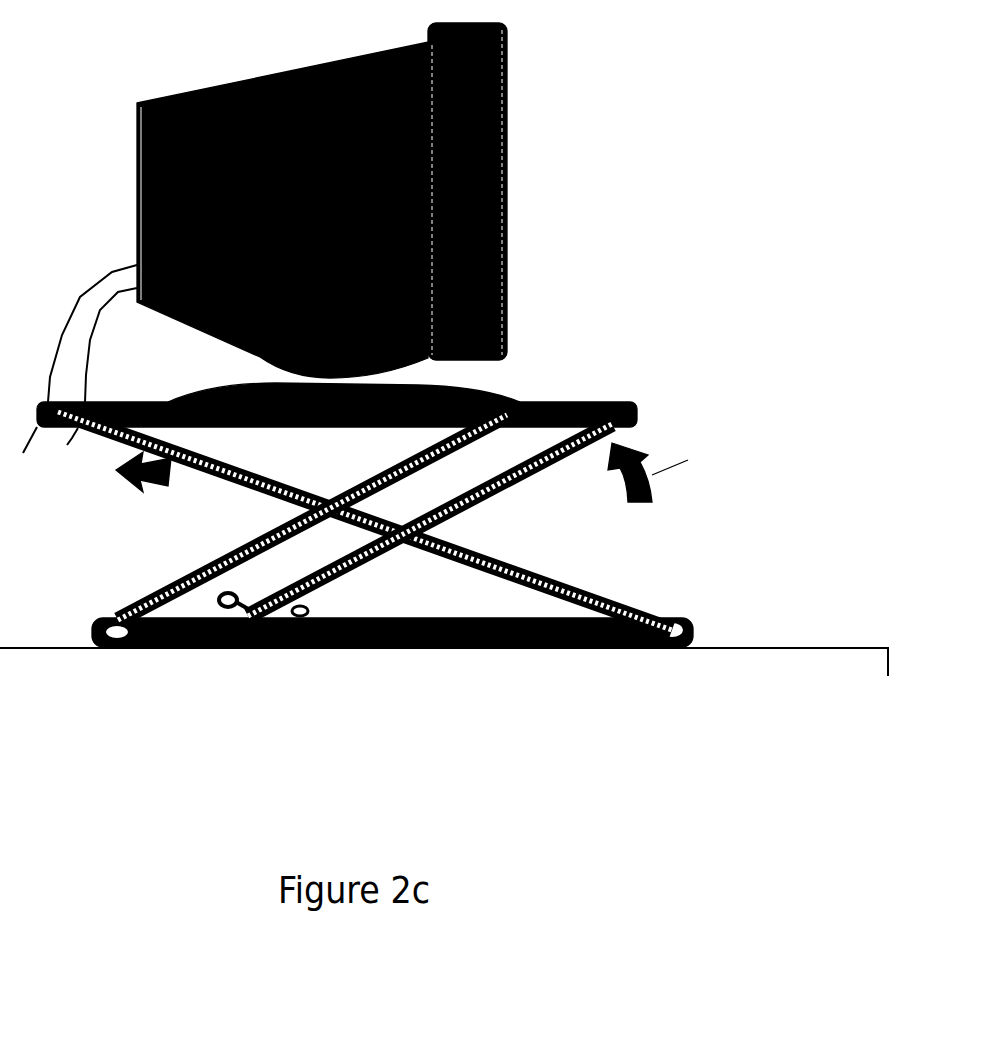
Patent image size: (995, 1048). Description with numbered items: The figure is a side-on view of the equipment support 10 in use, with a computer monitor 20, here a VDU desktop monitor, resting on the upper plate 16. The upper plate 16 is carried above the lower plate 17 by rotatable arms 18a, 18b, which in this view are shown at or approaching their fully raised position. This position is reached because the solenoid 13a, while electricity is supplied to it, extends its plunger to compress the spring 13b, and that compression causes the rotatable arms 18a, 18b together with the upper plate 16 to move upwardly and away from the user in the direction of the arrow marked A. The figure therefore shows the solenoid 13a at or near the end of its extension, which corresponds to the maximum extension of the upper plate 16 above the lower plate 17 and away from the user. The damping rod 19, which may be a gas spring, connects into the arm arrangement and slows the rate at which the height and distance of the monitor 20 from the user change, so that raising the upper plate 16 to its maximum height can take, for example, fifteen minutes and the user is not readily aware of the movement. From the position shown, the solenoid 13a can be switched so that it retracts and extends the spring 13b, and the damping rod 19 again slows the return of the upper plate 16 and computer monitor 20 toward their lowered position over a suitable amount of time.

The equipment support 10 is at (752, 343).
The solenoid 13a is at (304, 612).
The spring 13b is at (204, 578).
The upper plate 16 is at (637, 412).
The lower plate 17 is at (672, 621).
The rotatable arm 18a is at (385, 474).
The rotatable arm 18b is at (459, 510).
The damping rod 19 is at (493, 557).
The computer monitor 20 is at (507, 137).